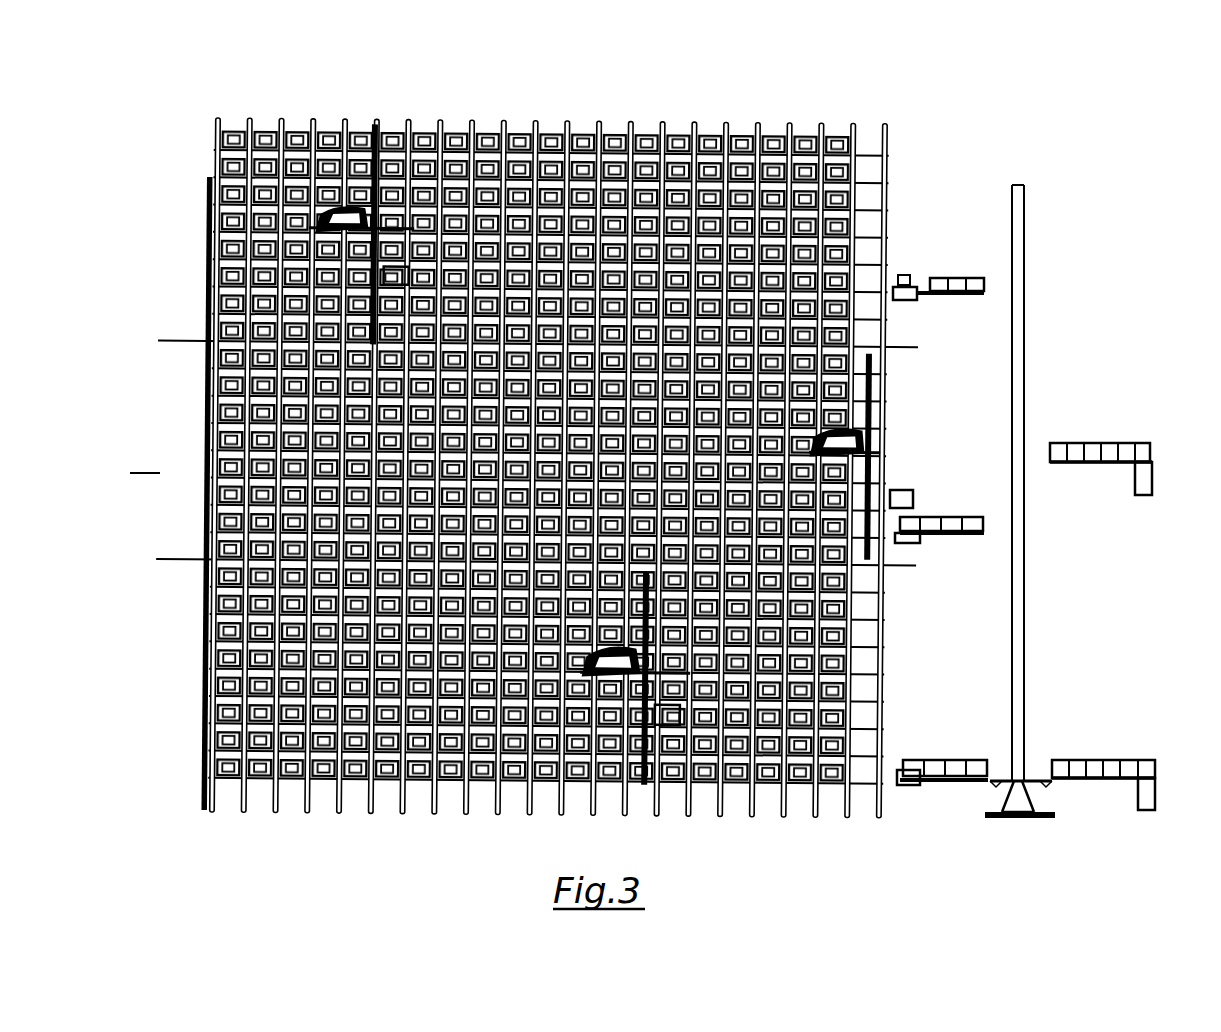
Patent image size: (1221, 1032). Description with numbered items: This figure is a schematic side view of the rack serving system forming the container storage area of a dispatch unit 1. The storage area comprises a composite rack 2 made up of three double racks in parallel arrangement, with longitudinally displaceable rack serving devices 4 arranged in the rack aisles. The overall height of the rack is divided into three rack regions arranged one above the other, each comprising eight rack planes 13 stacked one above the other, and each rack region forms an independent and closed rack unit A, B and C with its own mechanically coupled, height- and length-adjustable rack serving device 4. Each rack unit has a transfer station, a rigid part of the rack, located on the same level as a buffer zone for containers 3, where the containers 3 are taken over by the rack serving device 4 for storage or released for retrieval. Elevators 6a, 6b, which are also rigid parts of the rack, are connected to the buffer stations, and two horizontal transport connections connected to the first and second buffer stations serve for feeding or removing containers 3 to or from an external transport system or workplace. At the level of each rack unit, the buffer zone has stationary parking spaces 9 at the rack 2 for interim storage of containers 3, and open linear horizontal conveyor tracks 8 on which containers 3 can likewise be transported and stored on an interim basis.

The dispatch unit 1 is at (1102, 126).
The composite rack 2 is at (172, 118).
The container 3 is at (232, 130).
The rack serving device 4 is at (352, 208).
The elevator 6a is at (1028, 645).
The elevator 6b is at (1020, 501).
The open linear horizontal conveyor track 8 is at (972, 295).
The stationary parking space 9 is at (910, 302).
The rack plane 13 is at (222, 300).